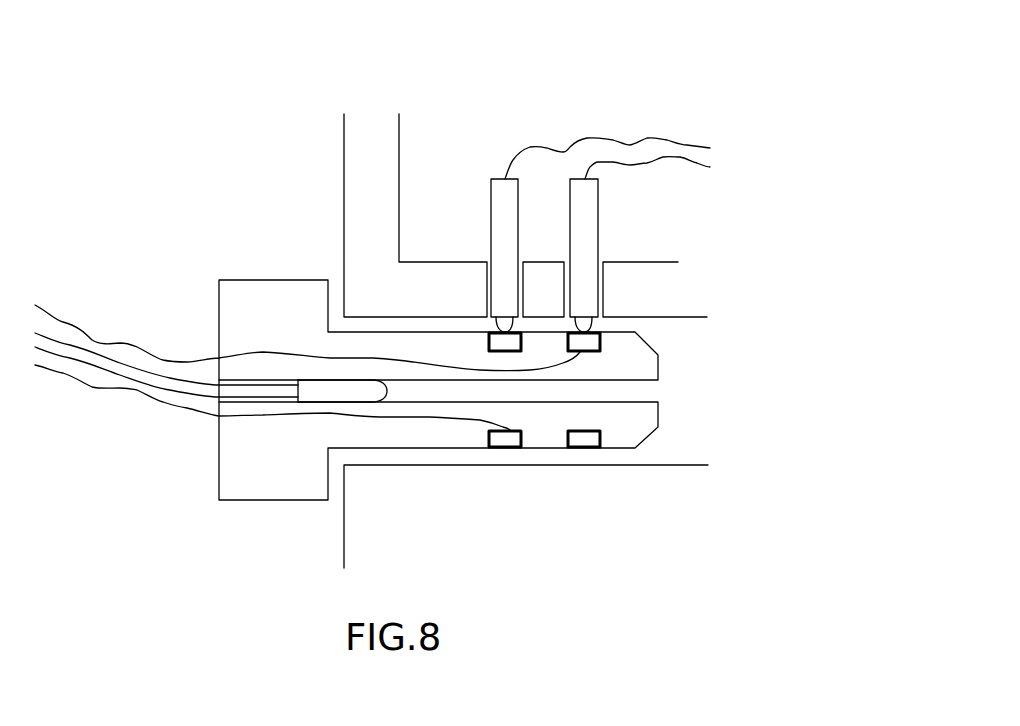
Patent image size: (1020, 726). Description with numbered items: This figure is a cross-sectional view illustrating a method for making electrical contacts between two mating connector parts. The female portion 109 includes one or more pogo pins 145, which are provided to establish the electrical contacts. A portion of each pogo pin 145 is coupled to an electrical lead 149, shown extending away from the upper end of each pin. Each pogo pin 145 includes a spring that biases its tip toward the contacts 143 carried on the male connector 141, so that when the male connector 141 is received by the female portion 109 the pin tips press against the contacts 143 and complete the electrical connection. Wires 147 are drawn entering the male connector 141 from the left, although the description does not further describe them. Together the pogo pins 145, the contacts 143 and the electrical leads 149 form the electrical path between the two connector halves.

The female portion 109 is at (344, 547).
The male connector 141 is at (243, 280).
The contacts 143 is at (583, 440).
The pogo pin 145 is at (598, 225).
The lead wires 147 is at (163, 393).
The electrical lead 149 is at (567, 148).